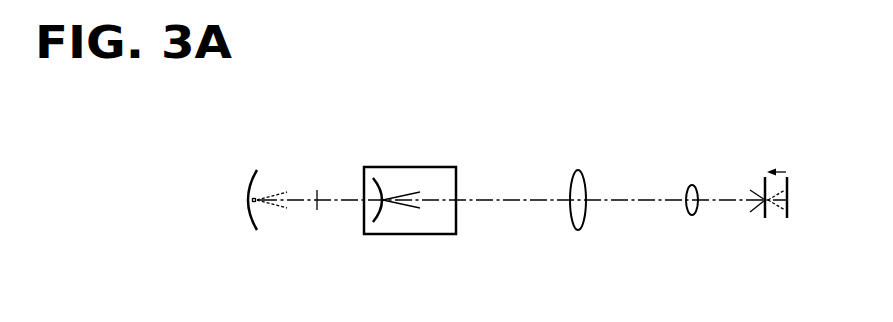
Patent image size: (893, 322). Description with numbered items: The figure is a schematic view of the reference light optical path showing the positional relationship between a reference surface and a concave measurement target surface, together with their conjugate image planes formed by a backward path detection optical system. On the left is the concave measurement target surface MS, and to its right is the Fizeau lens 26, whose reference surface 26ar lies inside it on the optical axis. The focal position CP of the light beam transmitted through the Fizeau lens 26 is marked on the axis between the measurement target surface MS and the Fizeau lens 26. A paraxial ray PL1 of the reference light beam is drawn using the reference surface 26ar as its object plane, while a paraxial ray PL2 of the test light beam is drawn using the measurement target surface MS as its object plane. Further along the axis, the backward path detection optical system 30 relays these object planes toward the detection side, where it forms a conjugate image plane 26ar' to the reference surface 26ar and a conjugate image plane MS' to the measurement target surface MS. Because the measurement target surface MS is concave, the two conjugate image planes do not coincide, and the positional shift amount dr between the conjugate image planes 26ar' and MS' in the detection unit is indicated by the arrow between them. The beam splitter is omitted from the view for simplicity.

The measurement target surface MS is at (264, 179).
The paraxial ray of the test light beam PL2 is at (277, 192).
The focal position CP is at (317, 210).
The Fizeau lens 26 is at (456, 223).
The reference surface 26ar is at (380, 175).
The paraxial ray of the reference light beam PL1 is at (415, 192).
The backward path detection optical system 30 is at (702, 243).
The conjugate image plane to the reference surface 26ar' is at (720, 180).
The conjugate image plane to the measurement target surface MS' is at (804, 180).
The positional shift amount dr is at (785, 171).